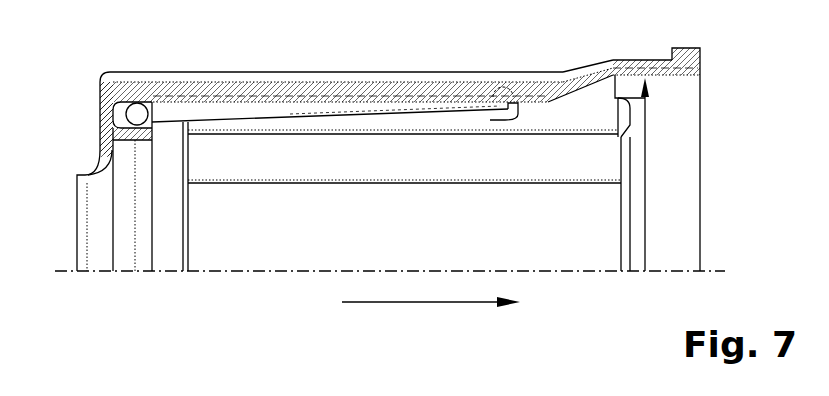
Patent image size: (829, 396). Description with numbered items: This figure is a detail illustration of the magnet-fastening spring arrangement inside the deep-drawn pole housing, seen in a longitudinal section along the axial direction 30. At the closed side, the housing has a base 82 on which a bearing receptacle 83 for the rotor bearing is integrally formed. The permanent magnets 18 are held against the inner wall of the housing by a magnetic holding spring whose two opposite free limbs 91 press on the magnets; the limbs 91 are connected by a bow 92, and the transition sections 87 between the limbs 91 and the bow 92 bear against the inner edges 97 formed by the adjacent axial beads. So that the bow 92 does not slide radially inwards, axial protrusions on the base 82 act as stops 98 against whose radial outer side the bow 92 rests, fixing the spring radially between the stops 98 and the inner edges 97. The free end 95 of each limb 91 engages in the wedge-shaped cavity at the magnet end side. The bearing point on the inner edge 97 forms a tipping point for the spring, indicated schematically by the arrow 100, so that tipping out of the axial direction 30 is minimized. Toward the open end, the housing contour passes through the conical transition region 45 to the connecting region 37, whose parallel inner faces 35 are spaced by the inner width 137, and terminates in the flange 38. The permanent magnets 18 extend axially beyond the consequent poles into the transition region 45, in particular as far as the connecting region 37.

The permanent magnet 18 is at (589, 255).
The axial direction 30 is at (428, 305).
The inner faces 35 is at (662, 78).
The connecting region 37 is at (647, 60).
The flange 38 is at (715, 69).
The transition region 45 is at (583, 73).
The base 82 is at (100, 157).
The bearing receptacle 83 is at (80, 232).
The transition sections 87 is at (156, 106).
The free limbs 91 is at (286, 116).
The bow 92 is at (134, 103).
The free end 95 is at (520, 112).
The inner edges 97 is at (191, 108).
The stops 98 is at (97, 165).
The arrow 100 is at (223, 160).
The inner width 137 is at (660, 178).